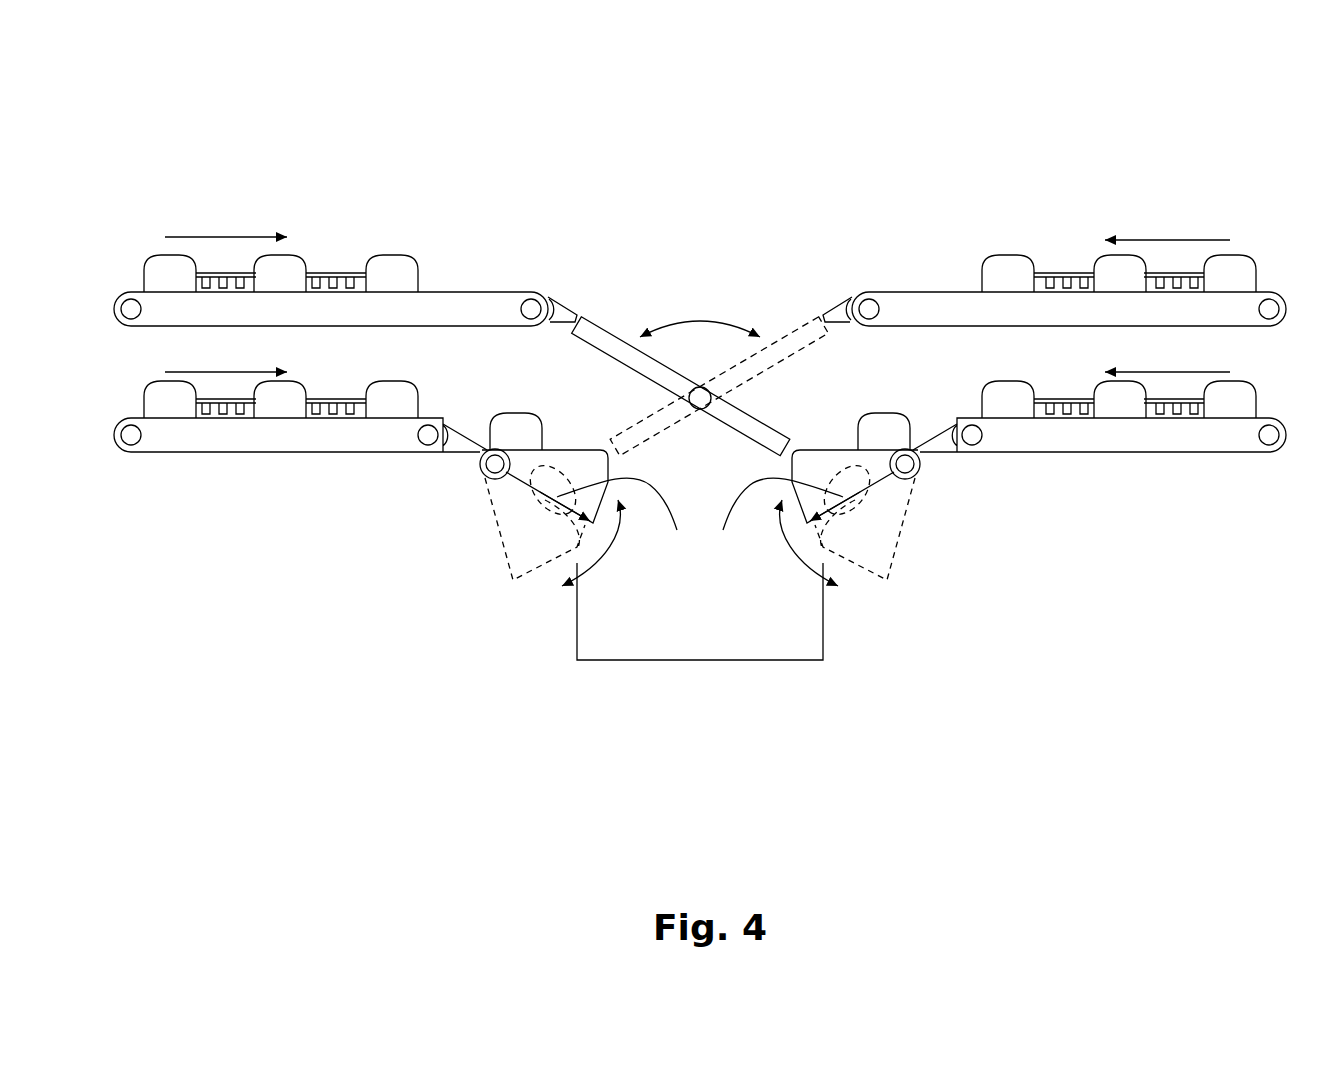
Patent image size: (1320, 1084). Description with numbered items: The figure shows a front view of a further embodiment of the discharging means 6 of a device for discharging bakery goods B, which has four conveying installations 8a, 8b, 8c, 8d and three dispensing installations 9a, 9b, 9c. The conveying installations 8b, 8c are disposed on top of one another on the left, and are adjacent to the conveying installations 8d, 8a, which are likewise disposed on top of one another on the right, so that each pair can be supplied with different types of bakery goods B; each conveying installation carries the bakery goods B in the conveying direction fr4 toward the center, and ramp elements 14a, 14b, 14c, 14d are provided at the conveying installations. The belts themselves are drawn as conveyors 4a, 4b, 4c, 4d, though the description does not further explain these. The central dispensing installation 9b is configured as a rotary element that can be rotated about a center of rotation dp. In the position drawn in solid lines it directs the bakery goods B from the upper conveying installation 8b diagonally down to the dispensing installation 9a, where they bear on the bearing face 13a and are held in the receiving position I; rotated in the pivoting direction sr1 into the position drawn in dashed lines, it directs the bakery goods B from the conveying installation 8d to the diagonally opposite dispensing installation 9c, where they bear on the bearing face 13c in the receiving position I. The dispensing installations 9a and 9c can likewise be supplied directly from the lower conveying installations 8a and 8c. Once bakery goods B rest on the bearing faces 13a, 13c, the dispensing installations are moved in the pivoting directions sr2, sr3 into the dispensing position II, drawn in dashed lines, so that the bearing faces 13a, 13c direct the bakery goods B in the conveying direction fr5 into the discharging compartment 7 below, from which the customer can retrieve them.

The discharging means 6 is at (280, 163).
The conveyor 4a is at (1043, 400).
The conveyor 4b is at (316, 268).
The conveyor 4c is at (340, 398).
The conveyor 4d is at (1050, 273).
The bakery goods B is at (395, 268).
The conveying installation 8a is at (1220, 452).
The conveying installation 8b is at (457, 292).
The conveying installation 8c is at (370, 452).
The conveying installation 8d is at (943, 292).
The ramp element 14a is at (955, 447).
The ramp element 14b is at (559, 305).
The ramp element 14c is at (445, 447).
The ramp element 14d is at (841, 305).
The dispensing installation 9a is at (920, 466).
The dispensing installation 9b is at (608, 350).
The dispensing installation 9c is at (480, 466).
The bearing face 13a is at (823, 450).
The bearing face 13c is at (568, 447).
The discharging compartment 7 is at (823, 638).
The center of rotation dp is at (700, 409).
The pivoting direction sr1 is at (694, 323).
The pivoting direction sr2 is at (591, 560).
The pivoting direction sr3 is at (798, 555).
The conveying direction fr4 is at (697, 289).
The conveying direction fr5 is at (700, 519).
The receiving position I is at (700, 490).
The dispensing position II is at (700, 529).